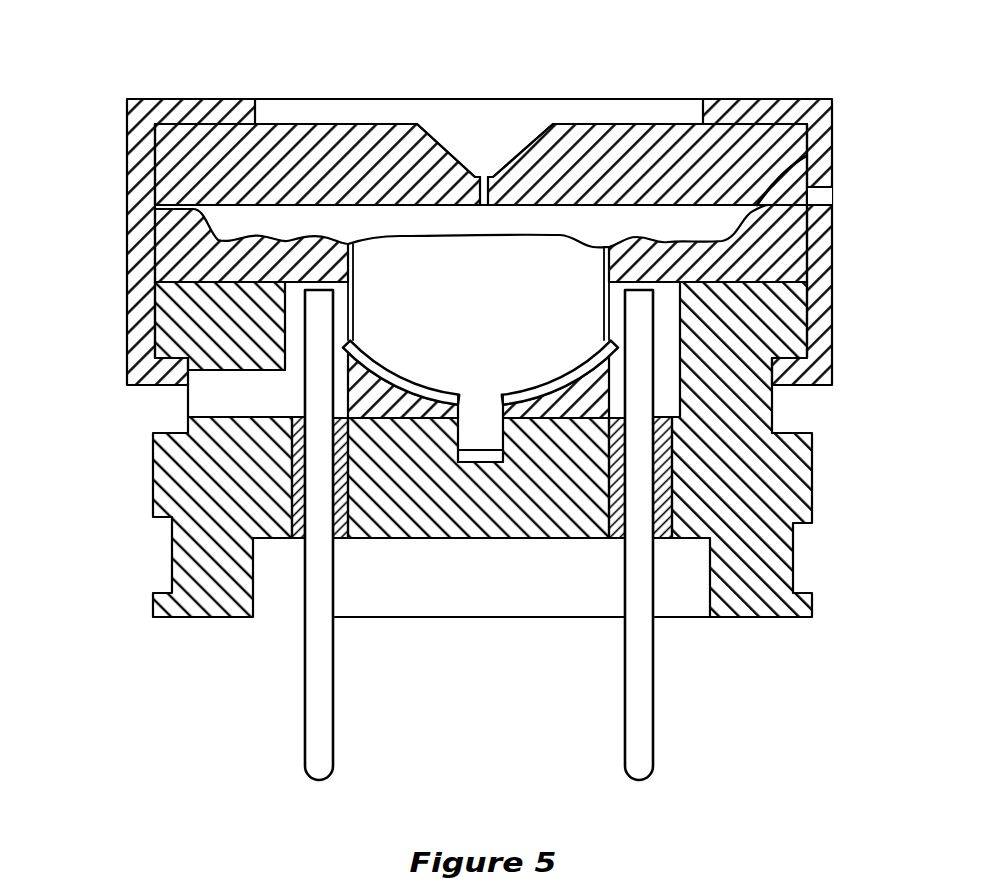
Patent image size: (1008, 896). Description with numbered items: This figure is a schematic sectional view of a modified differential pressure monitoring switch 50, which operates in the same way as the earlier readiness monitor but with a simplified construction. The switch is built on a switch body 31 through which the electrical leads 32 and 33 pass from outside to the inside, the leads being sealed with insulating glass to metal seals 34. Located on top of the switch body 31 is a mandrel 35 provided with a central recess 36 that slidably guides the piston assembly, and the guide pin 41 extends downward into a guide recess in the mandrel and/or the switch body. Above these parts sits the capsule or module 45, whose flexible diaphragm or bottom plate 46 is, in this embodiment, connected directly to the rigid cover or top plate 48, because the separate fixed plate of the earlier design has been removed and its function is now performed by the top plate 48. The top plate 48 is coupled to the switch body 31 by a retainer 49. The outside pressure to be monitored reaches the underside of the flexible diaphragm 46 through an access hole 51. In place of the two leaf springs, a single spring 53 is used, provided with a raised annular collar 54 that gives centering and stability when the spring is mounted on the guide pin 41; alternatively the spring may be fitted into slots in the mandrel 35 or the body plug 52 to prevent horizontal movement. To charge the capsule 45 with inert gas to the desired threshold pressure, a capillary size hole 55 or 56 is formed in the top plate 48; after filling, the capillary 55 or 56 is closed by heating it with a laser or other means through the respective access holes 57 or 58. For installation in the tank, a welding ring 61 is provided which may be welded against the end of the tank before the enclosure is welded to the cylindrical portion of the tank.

The modified differential pressure monitoring switch 50 is at (585, 78).
The retainer 49 is at (150, 215).
The top plate 48 is at (705, 146).
The access hole 57 is at (445, 126).
The capillary size hole 55 is at (484, 206).
The access hole 58 is at (833, 193).
The capillary size hole 56 is at (806, 156).
The flexible diaphragm 46 is at (397, 236).
The capsule 45 is at (272, 234).
The central recess 36 is at (357, 299).
The body plug 52 is at (461, 315).
The mandrel 35 is at (597, 394).
The spring 53 is at (392, 380).
The switch body 31 is at (798, 490).
The access hole 51 is at (240, 372).
The raised annular collar 54 is at (467, 395).
The guide pin 41 is at (478, 440).
The glass to metal seals 34 is at (297, 540).
The welding ring 61 is at (812, 602).
The electrical lead 32 is at (310, 729).
The electrical lead 33 is at (650, 739).